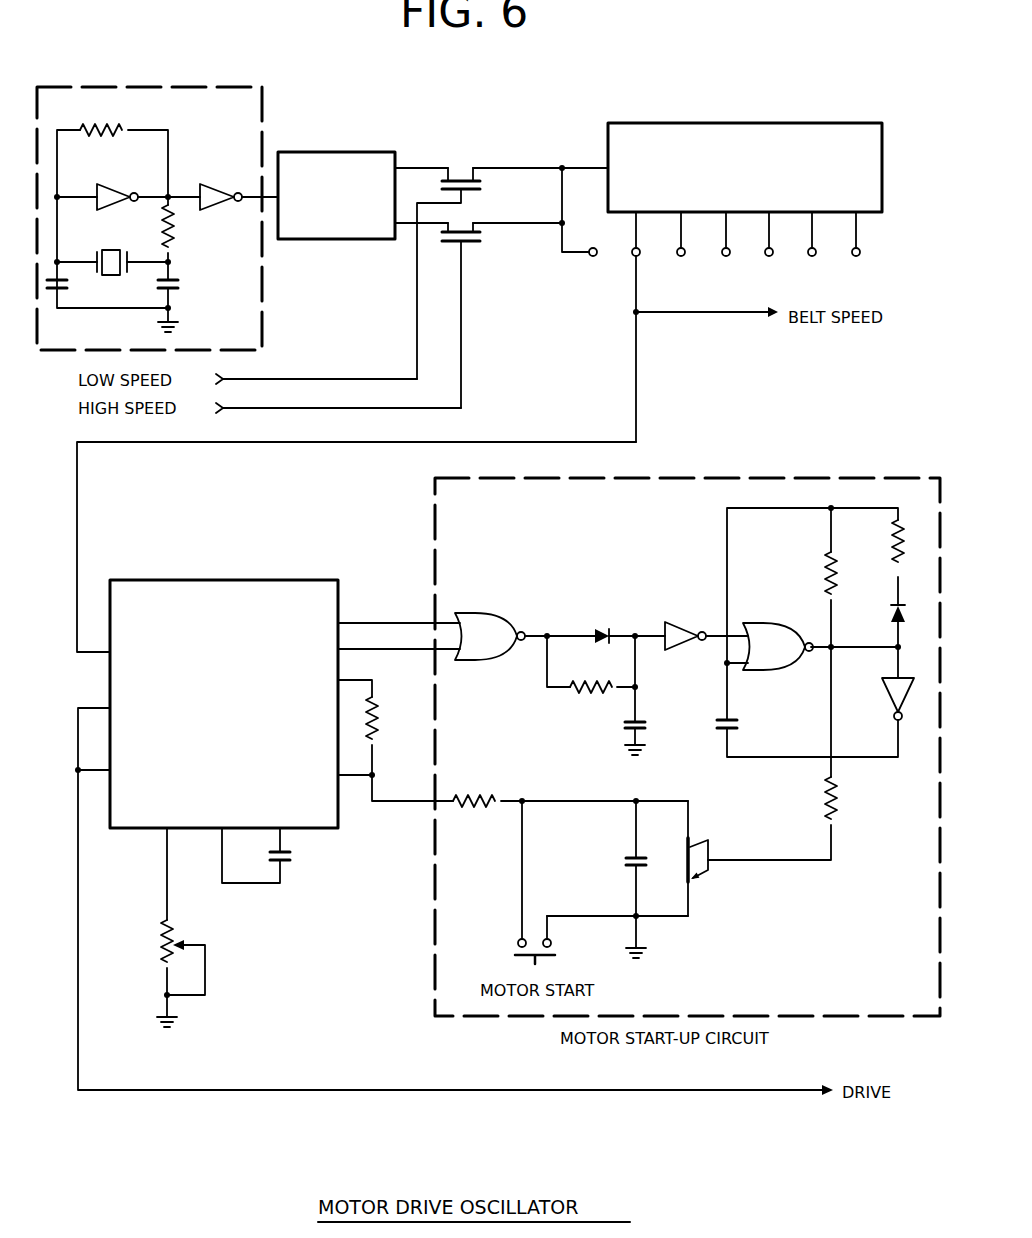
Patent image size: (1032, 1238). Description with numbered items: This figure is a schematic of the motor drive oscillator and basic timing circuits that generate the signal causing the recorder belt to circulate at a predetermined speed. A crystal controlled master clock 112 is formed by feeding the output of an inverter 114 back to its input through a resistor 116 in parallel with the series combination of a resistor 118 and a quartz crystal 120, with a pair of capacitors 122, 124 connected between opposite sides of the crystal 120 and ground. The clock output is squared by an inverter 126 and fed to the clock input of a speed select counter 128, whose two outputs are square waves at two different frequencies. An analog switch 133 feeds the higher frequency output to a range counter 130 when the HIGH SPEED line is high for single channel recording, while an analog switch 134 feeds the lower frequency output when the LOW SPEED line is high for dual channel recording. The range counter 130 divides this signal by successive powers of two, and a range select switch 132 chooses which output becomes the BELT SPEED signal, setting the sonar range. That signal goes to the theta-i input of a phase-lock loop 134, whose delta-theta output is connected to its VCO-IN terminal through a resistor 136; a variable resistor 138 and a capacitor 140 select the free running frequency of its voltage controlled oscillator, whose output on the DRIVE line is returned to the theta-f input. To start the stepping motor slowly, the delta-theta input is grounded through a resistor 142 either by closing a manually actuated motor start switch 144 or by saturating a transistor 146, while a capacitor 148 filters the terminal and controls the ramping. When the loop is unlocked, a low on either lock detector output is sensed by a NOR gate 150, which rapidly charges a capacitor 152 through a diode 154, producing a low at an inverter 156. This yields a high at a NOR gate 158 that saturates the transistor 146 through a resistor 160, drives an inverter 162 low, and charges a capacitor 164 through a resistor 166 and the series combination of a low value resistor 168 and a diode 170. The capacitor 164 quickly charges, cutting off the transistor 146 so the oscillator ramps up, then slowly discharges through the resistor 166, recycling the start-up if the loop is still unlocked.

The master clock 112 is at (260, 78).
The inverter 114 is at (117, 184).
The resistor 116 is at (98, 121).
The resistor 118 is at (176, 239).
The quartz crystal 120 is at (105, 250).
The capacitor 122 is at (57, 290).
The capacitor 124 is at (175, 290).
The inverter 126 is at (217, 184).
The speed select counter 128 is at (330, 243).
The range counter 130 is at (625, 123).
The range select switch 132 is at (632, 260).
The analog switch 133 is at (481, 252).
The phase-lock loop 134 is at (481, 189).
The resistor 136 is at (379, 706).
The variable resistor 138 is at (157, 962).
The capacitor 140 is at (287, 866).
The resistor 142 is at (475, 796).
The motor start switch 144 is at (515, 955).
The transistor 146 is at (712, 876).
The capacitor 148 is at (627, 853).
The NOR gate 150 is at (484, 613).
The capacitor 152 is at (640, 719).
The diode 154 is at (598, 628).
The inverter 156 is at (672, 620).
The NOR gate 158 is at (776, 623).
The resistor 160 is at (838, 826).
The inverter 162 is at (895, 707).
The capacitor 164 is at (729, 719).
The resistor 166 is at (825, 566).
The resistor 168 is at (892, 542).
The diode 170 is at (891, 613).